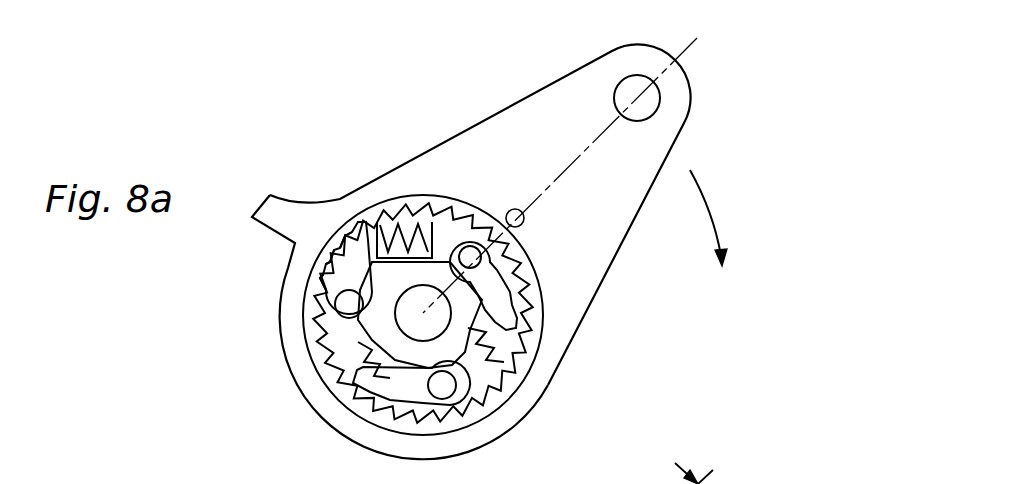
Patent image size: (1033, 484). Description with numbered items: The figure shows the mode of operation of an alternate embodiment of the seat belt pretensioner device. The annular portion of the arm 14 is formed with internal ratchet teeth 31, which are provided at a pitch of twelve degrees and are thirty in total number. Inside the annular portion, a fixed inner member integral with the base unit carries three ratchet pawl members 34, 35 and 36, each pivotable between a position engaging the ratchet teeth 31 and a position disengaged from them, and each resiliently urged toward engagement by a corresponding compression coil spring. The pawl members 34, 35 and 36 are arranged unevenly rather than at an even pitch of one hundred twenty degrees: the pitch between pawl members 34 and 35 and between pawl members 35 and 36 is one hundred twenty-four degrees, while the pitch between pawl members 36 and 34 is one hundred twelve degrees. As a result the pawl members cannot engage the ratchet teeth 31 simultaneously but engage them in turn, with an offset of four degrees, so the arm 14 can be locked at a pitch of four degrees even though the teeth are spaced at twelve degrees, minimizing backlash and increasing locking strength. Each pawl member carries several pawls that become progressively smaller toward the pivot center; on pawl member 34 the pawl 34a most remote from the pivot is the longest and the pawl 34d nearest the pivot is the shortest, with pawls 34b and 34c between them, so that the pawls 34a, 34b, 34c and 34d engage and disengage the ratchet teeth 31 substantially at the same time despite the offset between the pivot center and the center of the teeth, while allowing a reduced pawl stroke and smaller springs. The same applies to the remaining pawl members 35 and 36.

The arm 14 is at (486, 104).
The ratchet teeth 31 is at (517, 364).
The ratchet pawl member 34 is at (318, 310).
The pawl 34a is at (362, 228).
The pawl 34b is at (343, 247).
The pawl 34c is at (327, 248).
The pawl 34d is at (323, 280).
The ratchet pawl member 35 is at (500, 265).
The ratchet pawl member 36 is at (385, 403).